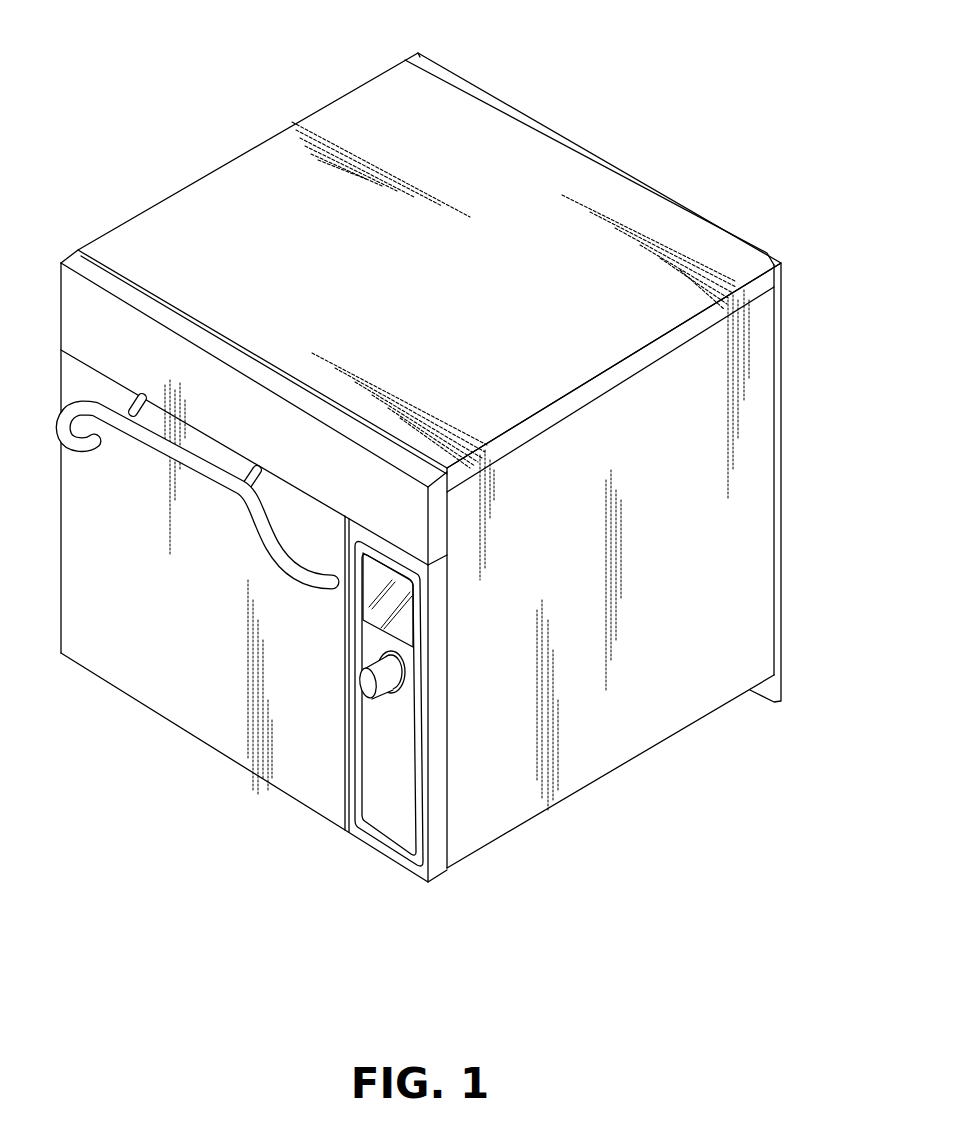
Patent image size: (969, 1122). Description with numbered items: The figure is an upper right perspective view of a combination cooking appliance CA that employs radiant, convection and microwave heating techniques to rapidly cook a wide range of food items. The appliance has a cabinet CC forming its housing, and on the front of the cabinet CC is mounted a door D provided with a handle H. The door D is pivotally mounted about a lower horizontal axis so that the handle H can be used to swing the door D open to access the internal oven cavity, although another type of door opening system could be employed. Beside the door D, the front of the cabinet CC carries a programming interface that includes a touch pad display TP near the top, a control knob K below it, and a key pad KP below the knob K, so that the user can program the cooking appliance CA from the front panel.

The cooking appliance CA is at (590, 90).
The cooking chamber housing CC is at (252, 144).
The door D is at (186, 698).
The handle H is at (157, 440).
The touch panel display TP is at (408, 603).
The knob K is at (400, 675).
The keypad KP is at (393, 825).